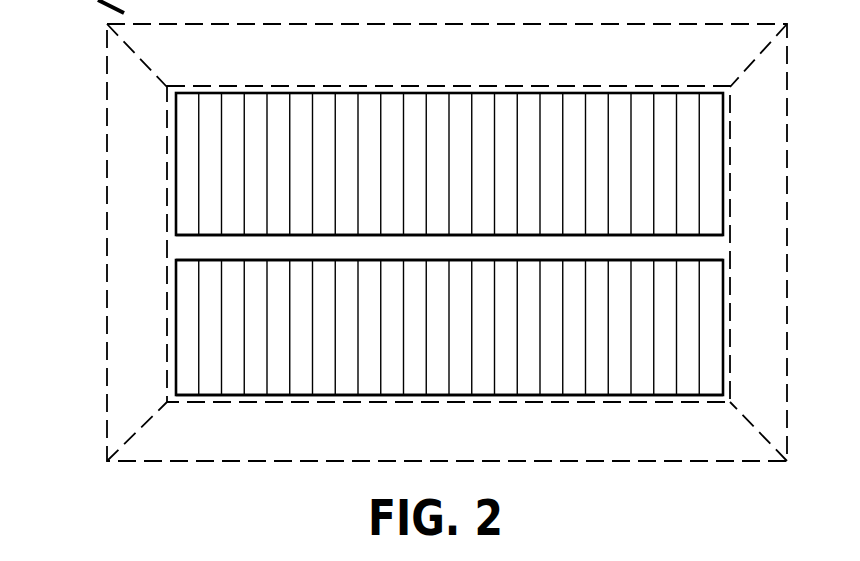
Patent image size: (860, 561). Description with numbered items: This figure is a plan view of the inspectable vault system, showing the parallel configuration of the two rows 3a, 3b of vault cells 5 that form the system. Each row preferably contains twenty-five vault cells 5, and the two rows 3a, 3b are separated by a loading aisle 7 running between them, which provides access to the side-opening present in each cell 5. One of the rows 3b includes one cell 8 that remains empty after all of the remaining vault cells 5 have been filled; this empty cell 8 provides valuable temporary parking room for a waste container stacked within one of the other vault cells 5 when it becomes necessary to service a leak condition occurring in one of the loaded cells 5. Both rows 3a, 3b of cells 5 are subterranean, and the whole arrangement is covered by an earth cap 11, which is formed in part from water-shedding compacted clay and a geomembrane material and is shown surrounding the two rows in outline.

The row of vault cells 3a is at (176, 234).
The row of vault cells 3b is at (176, 259).
The vault cell 5 is at (460, 100).
The loading aisle 7 is at (198, 247).
The empty cell 8 is at (462, 377).
The earth cap 11 is at (283, 57).